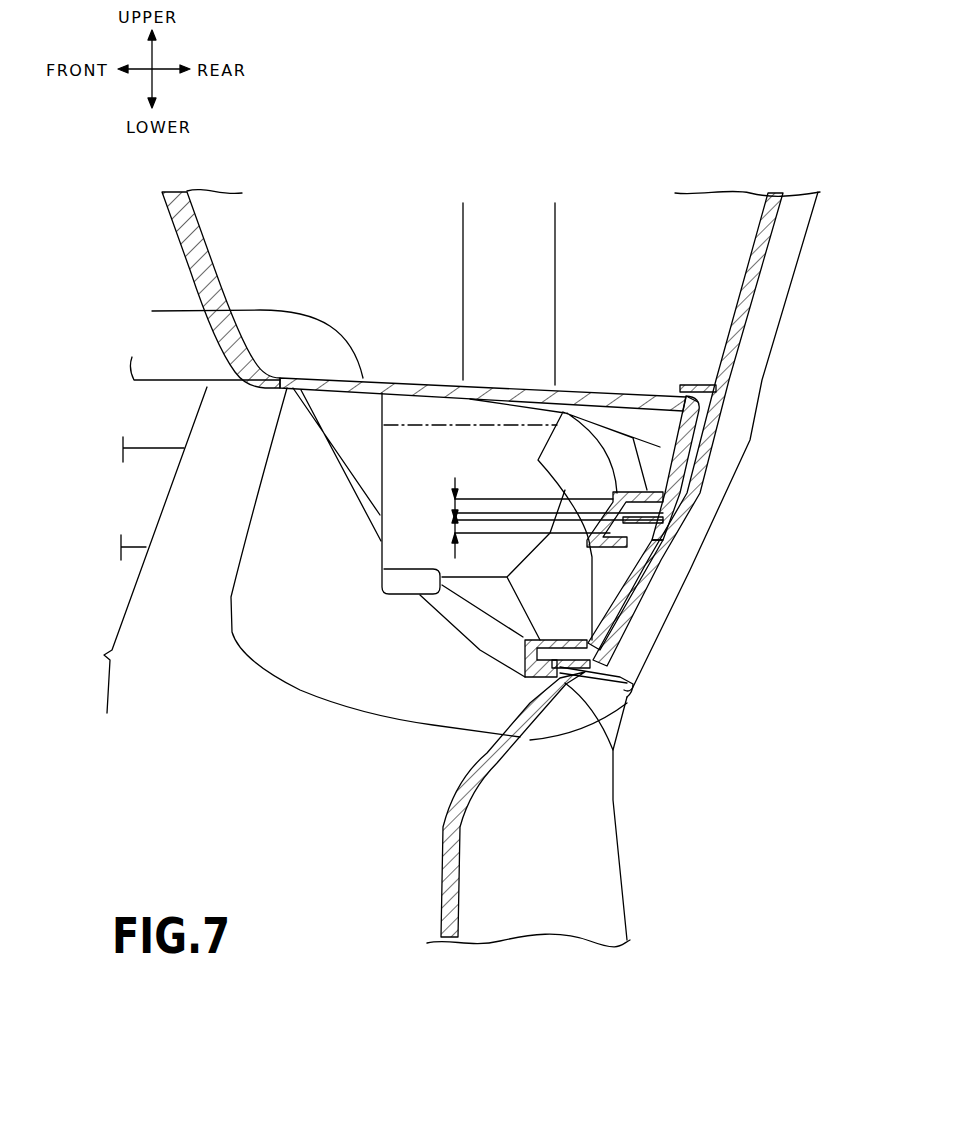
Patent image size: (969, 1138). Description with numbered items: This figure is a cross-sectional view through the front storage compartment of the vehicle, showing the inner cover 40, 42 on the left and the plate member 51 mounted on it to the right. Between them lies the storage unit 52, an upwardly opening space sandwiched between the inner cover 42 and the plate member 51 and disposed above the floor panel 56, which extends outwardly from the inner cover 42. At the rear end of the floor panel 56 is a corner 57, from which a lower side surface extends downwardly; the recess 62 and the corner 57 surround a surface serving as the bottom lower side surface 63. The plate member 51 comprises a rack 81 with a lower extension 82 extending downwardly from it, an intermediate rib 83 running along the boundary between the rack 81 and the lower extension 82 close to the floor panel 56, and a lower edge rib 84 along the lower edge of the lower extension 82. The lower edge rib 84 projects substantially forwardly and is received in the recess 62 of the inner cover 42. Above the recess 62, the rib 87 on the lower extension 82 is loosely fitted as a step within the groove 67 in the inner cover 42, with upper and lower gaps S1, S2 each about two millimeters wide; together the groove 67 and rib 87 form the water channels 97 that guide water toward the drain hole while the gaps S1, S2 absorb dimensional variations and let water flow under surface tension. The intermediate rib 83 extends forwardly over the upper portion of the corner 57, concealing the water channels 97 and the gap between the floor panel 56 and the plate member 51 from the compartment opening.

The vehicle body panel 40 is at (358, 300).
The inner cover 42 is at (177, 264).
The plate member 51 is at (808, 268).
The storage unit 52 is at (521, 262).
The floor panel 56 is at (242, 337).
The corner 57 is at (708, 397).
The recess 62 is at (525, 677).
The bottom lower side surface 63 is at (633, 572).
The groove 67 is at (638, 505).
The rack 81 is at (798, 218).
The lower extension 82 is at (643, 533).
The intermediate rib 83 is at (690, 385).
The lower edge rib 84 is at (613, 743).
The rib 87 is at (638, 526).
The water channel 97 is at (722, 536).
The upper gap S1 is at (542, 518).
The lower gap S2 is at (540, 527).